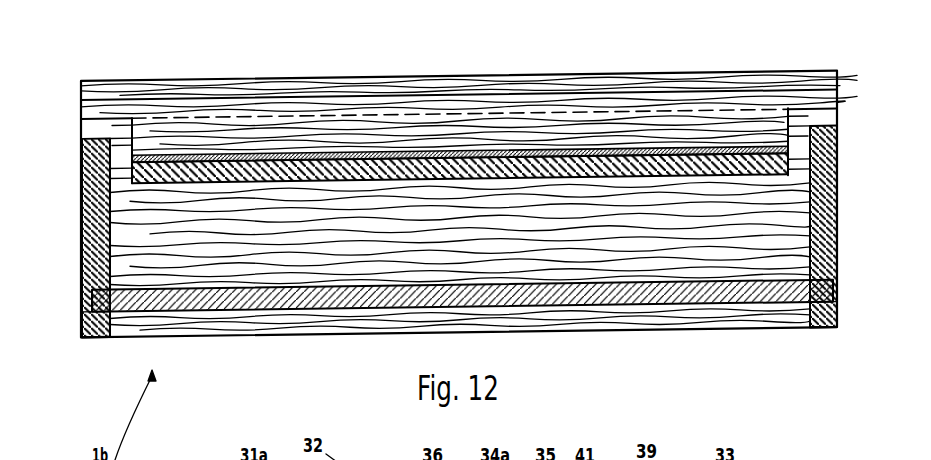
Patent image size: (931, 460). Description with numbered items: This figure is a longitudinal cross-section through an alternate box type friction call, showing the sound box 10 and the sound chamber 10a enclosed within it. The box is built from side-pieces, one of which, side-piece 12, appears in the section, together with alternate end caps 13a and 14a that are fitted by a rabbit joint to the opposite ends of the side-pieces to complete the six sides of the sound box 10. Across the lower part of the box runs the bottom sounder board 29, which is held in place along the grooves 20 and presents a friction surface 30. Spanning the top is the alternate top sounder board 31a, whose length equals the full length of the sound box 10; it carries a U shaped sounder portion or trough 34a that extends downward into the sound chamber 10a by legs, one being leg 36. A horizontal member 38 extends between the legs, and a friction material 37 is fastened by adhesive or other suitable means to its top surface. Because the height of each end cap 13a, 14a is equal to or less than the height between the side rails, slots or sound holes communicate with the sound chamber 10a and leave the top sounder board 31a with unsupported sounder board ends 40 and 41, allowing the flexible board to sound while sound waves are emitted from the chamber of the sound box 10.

The sound box 10 is at (454, 228).
The sound chamber 10a is at (473, 245).
The side-piece 12 is at (80, 234).
The end cap 13a is at (822, 328).
The end cap 14a is at (102, 337).
The grooves 20 is at (454, 282).
The bottom sounder board 29 is at (262, 296).
The friction surface 30 is at (304, 330).
The top sounder board 31a is at (335, 83).
The U shaped sounder portion or trough 34a is at (232, 132).
The leg 36 is at (380, 125).
The friction material 37 is at (400, 147).
The horizontal member 38 is at (540, 165).
The unsupported sounder board end 40 is at (837, 112).
The unsupported sounder board end 41 is at (78, 143).